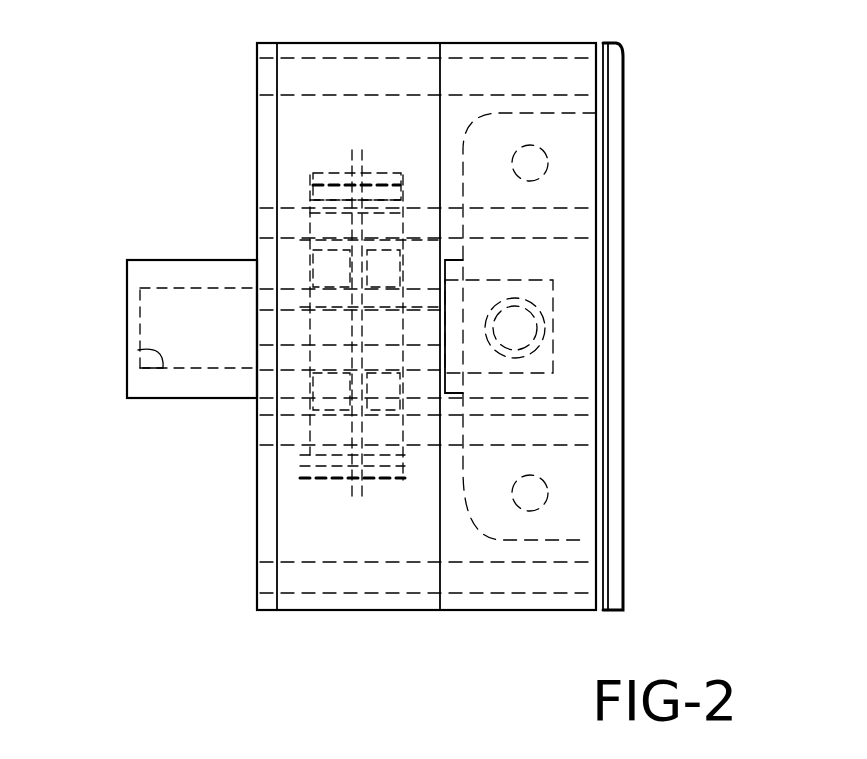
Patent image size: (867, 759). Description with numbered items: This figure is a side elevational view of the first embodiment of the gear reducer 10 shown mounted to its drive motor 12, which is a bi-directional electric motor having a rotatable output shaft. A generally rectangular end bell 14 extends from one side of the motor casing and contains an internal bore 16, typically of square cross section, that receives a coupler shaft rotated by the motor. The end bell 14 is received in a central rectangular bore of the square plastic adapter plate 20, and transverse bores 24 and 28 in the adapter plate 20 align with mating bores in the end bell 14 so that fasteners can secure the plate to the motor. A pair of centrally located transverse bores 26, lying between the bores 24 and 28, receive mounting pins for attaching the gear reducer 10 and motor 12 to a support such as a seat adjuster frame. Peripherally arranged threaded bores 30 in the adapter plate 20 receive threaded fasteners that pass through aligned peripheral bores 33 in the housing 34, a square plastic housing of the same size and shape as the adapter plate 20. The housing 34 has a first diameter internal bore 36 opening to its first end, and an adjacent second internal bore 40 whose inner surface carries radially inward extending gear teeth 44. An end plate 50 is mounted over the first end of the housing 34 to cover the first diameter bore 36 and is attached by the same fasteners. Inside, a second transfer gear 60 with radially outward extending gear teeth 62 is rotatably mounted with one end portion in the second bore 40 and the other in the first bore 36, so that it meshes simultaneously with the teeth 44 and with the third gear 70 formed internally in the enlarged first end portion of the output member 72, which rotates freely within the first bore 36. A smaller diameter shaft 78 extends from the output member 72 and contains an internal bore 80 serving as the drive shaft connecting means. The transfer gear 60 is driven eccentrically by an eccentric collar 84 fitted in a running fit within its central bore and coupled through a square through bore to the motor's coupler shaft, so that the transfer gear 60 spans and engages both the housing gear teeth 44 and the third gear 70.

The gear reducer 10 is at (62, 112).
The drive motor 12 is at (612, 603).
The end bell 14 is at (453, 144).
The internal bore 16 is at (608, 362).
The adapter plate 20 is at (585, 42).
The transverse bores 24 is at (528, 158).
The transverse bores 26 is at (530, 318).
The transverse bores 28 is at (532, 488).
The threaded bores 30 is at (540, 60).
The peripheral bores 33 is at (310, 60).
The housing 34 is at (306, 603).
The first diameter internal bore 36 is at (310, 157).
The second internal bore 40 is at (387, 173).
The gear teeth 44 is at (388, 483).
The end plate 50 is at (260, 550).
The second transfer gear 60 is at (380, 212).
The gear teeth 62 is at (320, 457).
The third gear 70 is at (310, 478).
The output member 72 is at (125, 281).
The shaft 78 is at (156, 387).
The internal bore 80 is at (138, 350).
The eccentric collar 84 is at (326, 274).